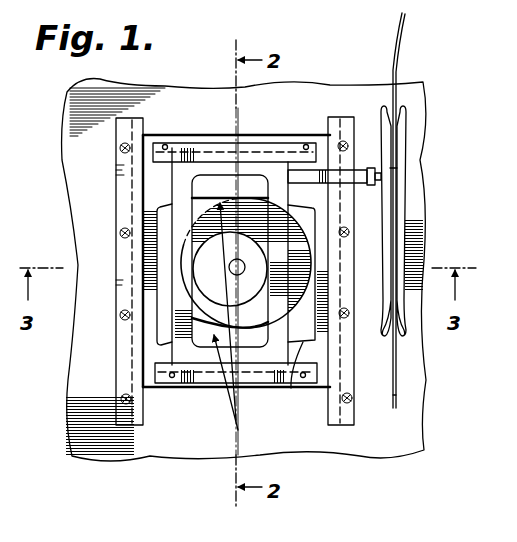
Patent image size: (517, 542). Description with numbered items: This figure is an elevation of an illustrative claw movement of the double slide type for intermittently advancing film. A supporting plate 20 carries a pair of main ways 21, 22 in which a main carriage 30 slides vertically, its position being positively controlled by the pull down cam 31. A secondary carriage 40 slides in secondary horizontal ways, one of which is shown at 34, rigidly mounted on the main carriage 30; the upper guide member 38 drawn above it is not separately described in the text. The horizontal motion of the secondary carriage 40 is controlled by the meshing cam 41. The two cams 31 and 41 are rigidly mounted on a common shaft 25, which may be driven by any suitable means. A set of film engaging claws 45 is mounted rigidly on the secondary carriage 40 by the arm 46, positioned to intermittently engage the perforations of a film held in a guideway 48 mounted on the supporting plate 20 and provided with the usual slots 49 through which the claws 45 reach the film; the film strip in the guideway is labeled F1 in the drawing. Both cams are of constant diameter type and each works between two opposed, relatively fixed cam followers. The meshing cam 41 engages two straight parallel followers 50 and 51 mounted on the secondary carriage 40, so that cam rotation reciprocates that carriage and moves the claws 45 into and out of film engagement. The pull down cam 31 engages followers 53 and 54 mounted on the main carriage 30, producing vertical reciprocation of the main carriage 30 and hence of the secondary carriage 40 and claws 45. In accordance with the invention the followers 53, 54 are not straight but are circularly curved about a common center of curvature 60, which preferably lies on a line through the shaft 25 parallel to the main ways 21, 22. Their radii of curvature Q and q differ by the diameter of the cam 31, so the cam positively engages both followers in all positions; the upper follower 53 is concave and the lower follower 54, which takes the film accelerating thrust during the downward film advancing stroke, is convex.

The supporting plate 20 is at (414, 128).
The main way 21 is at (143, 128).
The main way 22 is at (328, 118).
The shaft 25 is at (235, 273).
The main carriage 30 is at (170, 392).
The pull down cam 31 is at (313, 267).
The secondary horizontal way 34 is at (198, 382).
The upper guide plate 38 is at (262, 143).
The secondary carriage 40 is at (196, 165).
The meshing cam 41 is at (230, 269).
The film engaging claws 45 is at (373, 169).
The arm 46 is at (362, 183).
The film guideway 48 is at (404, 250).
The slot 49 is at (398, 168).
The follower 50 is at (172, 190).
The follower 51 is at (284, 308).
The follower 53 is at (198, 199).
The follower 54 is at (301, 374).
The center of curvature 60 is at (240, 455).
The radius of curvature q is at (230, 412).
The radius of curvature Q is at (234, 426).
The strip end F' F1 is at (399, 373).